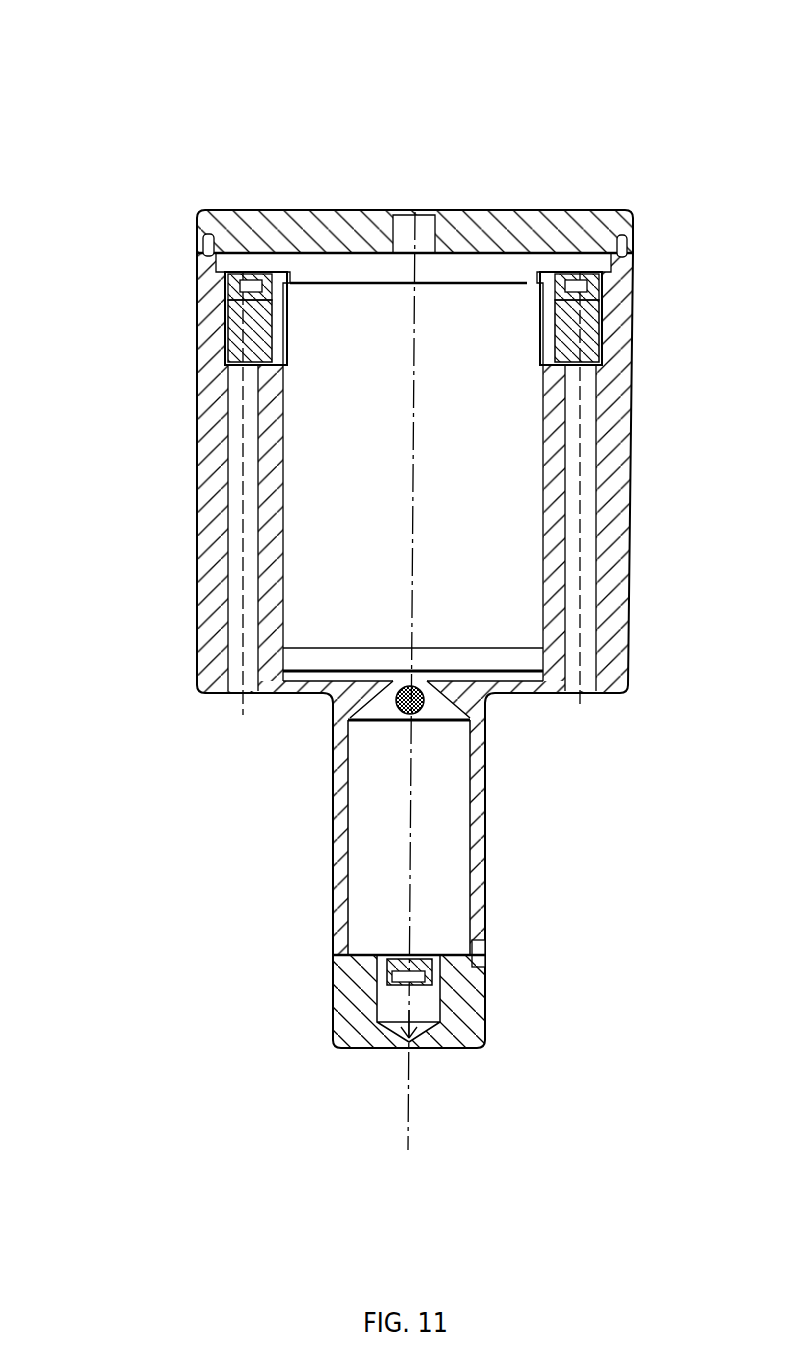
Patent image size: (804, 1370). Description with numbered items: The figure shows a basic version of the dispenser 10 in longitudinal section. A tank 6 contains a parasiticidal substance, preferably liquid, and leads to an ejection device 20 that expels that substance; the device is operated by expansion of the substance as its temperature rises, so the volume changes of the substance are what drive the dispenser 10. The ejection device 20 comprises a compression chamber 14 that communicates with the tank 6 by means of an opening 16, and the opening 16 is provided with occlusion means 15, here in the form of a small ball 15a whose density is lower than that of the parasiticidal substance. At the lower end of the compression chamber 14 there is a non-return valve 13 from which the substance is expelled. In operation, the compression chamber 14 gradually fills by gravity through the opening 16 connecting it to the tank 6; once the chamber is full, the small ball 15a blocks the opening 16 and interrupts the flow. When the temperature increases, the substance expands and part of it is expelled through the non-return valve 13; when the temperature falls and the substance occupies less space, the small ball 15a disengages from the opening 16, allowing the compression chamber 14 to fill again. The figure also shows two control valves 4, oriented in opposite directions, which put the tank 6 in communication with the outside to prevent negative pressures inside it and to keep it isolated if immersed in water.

The dispenser 10 is at (98, 203).
The tank 6 is at (626, 248).
The control valves 4 is at (225, 331).
The opening 16 is at (418, 668).
The occlusion means 15 is at (345, 732).
The small ball 15a is at (425, 712).
The compression chamber 14 is at (370, 832).
The non-return valve 13 is at (440, 983).
The ejection device 20 is at (472, 1050).